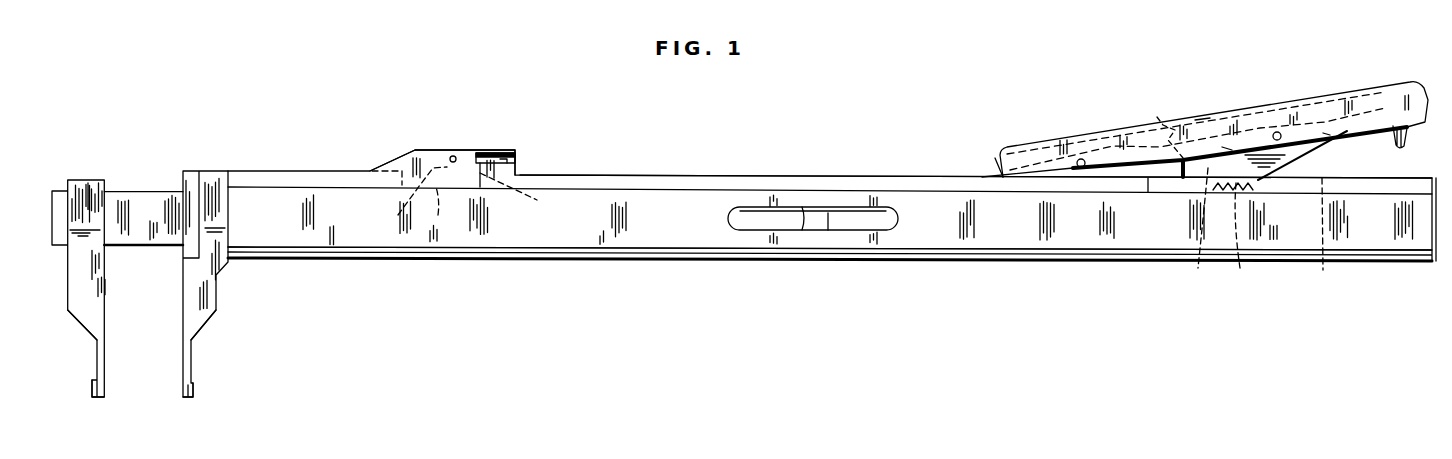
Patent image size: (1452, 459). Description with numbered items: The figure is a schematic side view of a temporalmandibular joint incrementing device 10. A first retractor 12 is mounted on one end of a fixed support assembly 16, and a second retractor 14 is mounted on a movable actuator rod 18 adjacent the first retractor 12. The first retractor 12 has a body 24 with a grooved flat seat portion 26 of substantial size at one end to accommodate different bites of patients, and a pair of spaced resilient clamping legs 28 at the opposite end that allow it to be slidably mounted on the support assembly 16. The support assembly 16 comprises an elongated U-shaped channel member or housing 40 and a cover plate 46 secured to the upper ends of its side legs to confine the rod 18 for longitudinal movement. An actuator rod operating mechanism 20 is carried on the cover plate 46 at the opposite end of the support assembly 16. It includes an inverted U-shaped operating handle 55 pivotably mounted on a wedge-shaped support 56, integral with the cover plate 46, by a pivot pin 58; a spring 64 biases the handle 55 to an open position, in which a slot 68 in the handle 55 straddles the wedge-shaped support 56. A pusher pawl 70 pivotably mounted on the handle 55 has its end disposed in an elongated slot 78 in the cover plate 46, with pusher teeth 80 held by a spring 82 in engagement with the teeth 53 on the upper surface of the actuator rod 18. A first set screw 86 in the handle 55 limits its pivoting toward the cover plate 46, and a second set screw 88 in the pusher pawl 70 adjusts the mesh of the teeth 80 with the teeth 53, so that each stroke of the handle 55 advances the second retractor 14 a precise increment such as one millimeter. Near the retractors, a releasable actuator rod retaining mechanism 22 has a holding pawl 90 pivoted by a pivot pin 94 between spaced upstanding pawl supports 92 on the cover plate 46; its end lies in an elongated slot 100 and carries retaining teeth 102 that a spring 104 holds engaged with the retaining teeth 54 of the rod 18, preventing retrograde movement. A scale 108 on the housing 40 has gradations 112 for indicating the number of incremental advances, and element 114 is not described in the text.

The temporalmandibular joint incrementing device 10 is at (528, 300).
The first retractor 12 is at (224, 345).
The second retractor 14 is at (80, 349).
The fixed support assembly 16 is at (732, 172).
The movable actuator rod 18 is at (140, 191).
The actuator rod operating mechanism 20 is at (1019, 133).
The releasable actuator rod retaining mechanism 22 is at (405, 126).
The body 24 is at (97, 322).
The grooved flat seat portion 26 is at (95, 373).
The spaced resilient clamping legs 28 is at (84, 180).
The U-shaped channel member or housing 40 is at (688, 240).
The cover plate 46 is at (665, 178).
The teeth 53 is at (1194, 227).
The retaining teeth 54 is at (436, 213).
The operating handle 55 is at (1200, 127).
The wedge-shaped support 56 is at (1148, 178).
The pivot pin 58 is at (1081, 159).
The spring 64 is at (1157, 117).
The slot 68 is at (997, 160).
The pusher pawl 70 is at (1278, 170).
The elongated slot 78 is at (1324, 234).
The pusher teeth 80 is at (1242, 235).
The spring 82 is at (1222, 147).
The first set screw 86 is at (1402, 146).
The second set screw 88 is at (1323, 133).
The holding pawl 90 is at (500, 153).
The upstanding pawl supports 92 is at (398, 158).
The pivot pin 94 is at (453, 156).
The elongated slot 100 is at (527, 197).
The retaining teeth 102 is at (410, 203).
The spring 104 is at (517, 160).
The scale 108 is at (889, 237).
The gradations 112 is at (802, 207).
The stop 114 is at (830, 213).